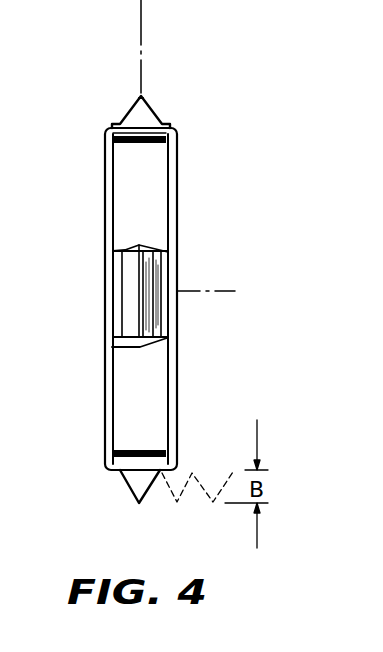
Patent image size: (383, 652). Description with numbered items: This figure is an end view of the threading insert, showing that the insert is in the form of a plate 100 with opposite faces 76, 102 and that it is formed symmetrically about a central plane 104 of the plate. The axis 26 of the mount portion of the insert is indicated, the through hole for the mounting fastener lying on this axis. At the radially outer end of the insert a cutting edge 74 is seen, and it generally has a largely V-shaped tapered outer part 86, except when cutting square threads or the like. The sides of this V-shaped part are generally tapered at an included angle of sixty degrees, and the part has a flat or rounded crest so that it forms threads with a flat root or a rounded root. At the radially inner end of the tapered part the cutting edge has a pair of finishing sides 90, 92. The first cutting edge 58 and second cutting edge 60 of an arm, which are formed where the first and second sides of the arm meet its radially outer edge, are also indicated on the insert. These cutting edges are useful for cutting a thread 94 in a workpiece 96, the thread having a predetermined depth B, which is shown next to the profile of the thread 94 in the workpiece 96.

The central plane 104 is at (143, 33).
The plate 100 is at (180, 225).
The face 76 is at (178, 163).
The face 102 is at (105, 178).
The cutting edge 74 is at (140, 97).
The V-shaped tapered outer part 86 is at (143, 97).
The finishing side 90 is at (112, 125).
The finishing side 92 is at (170, 125).
The first cutting edge 58 is at (139, 245).
The second cutting edge 60 is at (140, 347).
The axis 26 is at (213, 295).
The thread 94 is at (213, 465).
The workpiece 96 is at (195, 468).